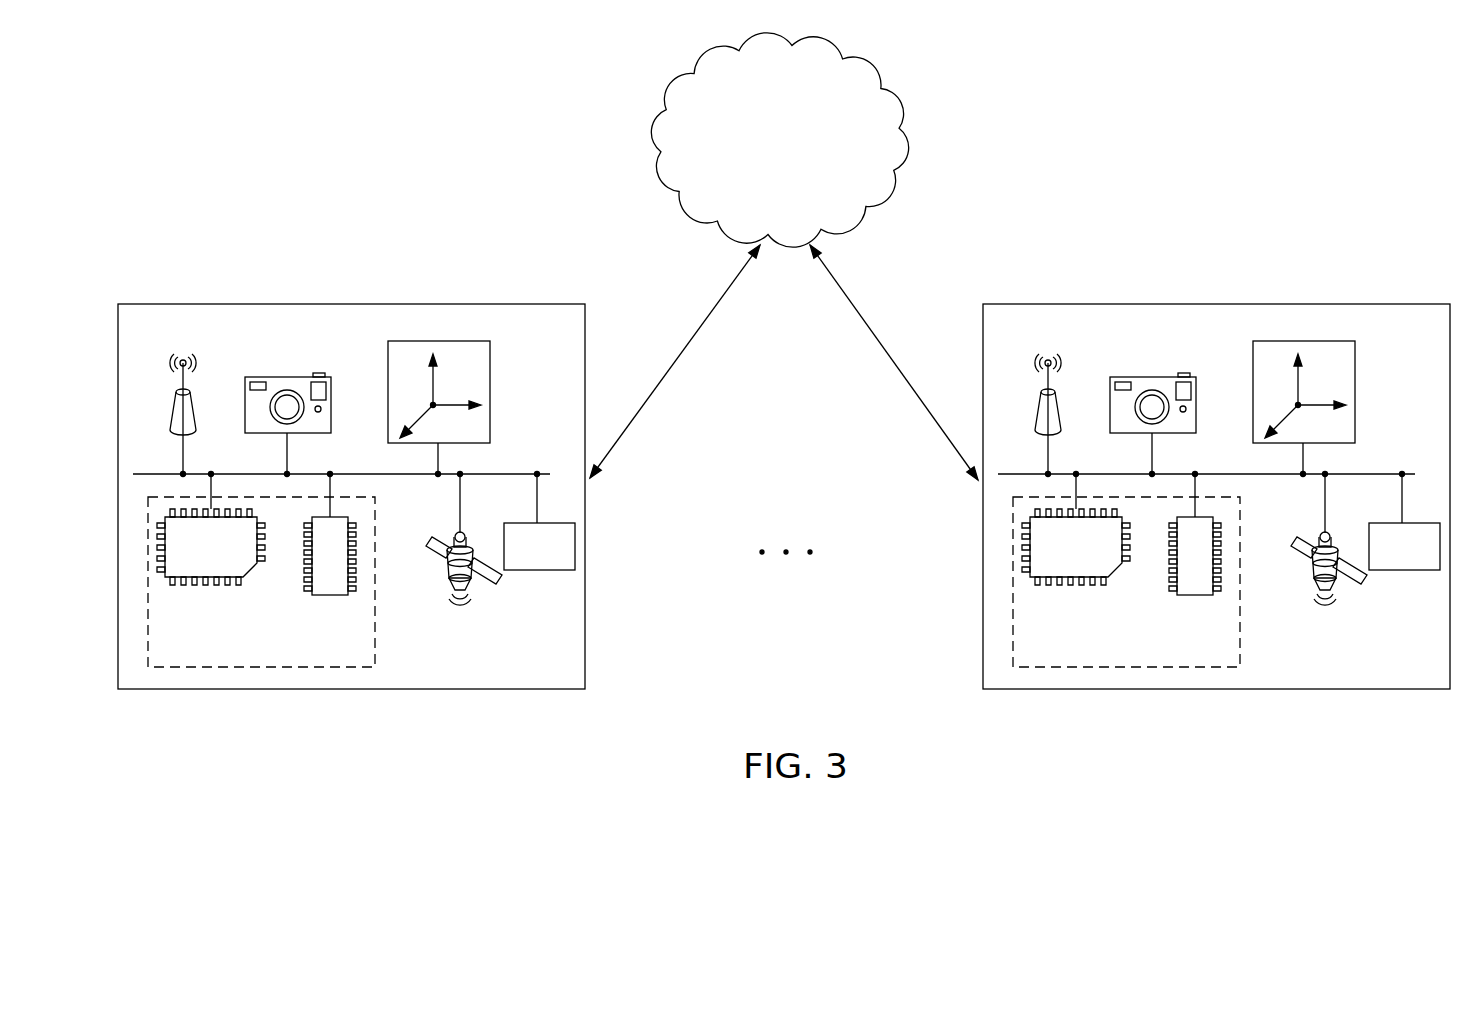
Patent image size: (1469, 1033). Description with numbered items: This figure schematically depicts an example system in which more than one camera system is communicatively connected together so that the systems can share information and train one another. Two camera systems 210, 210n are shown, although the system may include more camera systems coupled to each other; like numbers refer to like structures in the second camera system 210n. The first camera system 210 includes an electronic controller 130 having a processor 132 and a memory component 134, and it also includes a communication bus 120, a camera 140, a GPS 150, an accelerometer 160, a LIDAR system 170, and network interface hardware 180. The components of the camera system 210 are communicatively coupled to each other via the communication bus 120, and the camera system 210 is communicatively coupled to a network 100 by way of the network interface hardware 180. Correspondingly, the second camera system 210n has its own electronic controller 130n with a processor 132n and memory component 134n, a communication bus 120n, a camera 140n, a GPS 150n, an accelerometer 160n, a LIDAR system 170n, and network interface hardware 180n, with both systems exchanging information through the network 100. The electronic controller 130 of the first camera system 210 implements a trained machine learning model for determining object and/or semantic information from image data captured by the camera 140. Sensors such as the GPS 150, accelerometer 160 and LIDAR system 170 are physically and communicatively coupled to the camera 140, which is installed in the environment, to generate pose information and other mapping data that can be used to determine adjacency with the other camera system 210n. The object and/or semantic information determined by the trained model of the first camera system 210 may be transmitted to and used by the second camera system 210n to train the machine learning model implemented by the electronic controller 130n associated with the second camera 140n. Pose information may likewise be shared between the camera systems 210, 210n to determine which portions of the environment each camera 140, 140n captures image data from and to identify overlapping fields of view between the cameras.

The network 100 is at (903, 138).
The camera system 210 is at (352, 304).
The camera system 210n is at (1216, 470).
The communication bus 120 is at (512, 474).
The communication bus 120n is at (1219, 452).
The electronic controller 130 is at (375, 642).
The electronic controller 130n is at (1173, 582).
The processor 132 is at (249, 577).
The processor 132n is at (1095, 552).
The memory component 134 is at (330, 595).
The memory component 134n is at (1207, 561).
The camera 140 is at (290, 377).
The camera 140n is at (1153, 398).
The GPS 150 is at (433, 561).
The GPS 150n is at (1310, 540).
The accelerometer 160 is at (490, 396).
The accelerometer 160n is at (1349, 407).
The LIDAR system 170 is at (538, 570).
The LIDAR system 170n is at (1412, 550).
The network interface hardware 180 is at (191, 395).
The network interface hardware 180n is at (1085, 414).